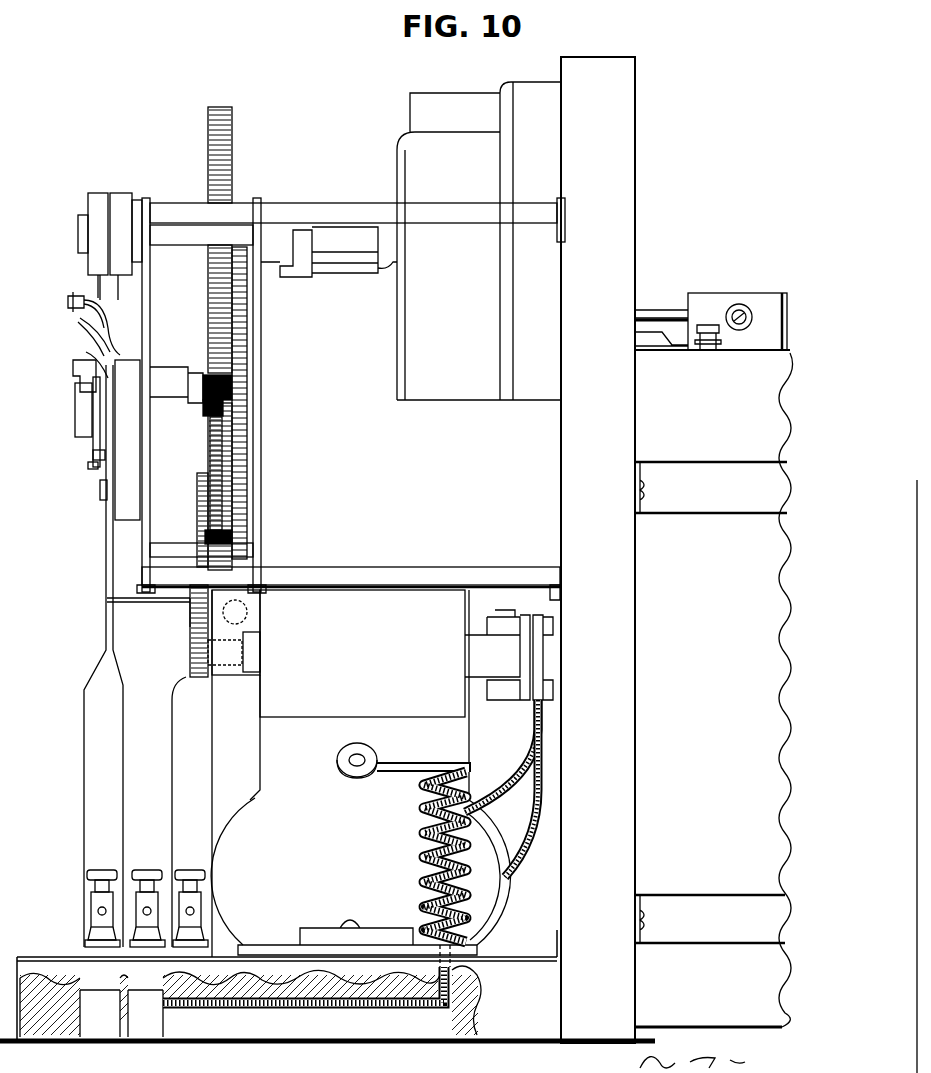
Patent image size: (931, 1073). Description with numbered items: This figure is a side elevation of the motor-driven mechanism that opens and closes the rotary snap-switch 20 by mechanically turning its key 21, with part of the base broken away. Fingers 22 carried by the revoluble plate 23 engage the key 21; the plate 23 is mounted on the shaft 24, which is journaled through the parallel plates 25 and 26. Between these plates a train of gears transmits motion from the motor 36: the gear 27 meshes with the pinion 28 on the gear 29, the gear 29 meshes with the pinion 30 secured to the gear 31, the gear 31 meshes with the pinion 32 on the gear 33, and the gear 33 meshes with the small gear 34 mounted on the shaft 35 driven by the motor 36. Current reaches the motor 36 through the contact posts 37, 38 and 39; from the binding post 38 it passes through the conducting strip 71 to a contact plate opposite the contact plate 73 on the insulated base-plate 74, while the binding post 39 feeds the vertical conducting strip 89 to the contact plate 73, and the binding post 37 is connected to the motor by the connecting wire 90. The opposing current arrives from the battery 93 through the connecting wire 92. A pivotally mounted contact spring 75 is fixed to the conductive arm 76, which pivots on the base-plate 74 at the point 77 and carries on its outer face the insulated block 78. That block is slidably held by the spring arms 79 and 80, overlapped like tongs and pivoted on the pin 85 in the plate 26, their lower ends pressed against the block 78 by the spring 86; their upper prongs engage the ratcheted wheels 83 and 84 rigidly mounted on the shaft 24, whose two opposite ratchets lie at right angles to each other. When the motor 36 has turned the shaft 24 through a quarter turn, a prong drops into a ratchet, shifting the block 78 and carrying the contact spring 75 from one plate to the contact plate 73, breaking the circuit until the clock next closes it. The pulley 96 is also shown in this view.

The rotary snap-switch 20 is at (479, 241).
The key 21 is at (356, 244).
The fingers 22 is at (382, 272).
The revoluble plate 23 is at (300, 278).
The shaft 24 is at (186, 238).
The parallel plate 25 is at (262, 200).
The front plate 26 is at (150, 198).
The gear 27 is at (232, 130).
The pinion 28 is at (205, 410).
The gear 29 is at (240, 385).
The pinion 30 is at (248, 415).
The gear 31 is at (212, 455).
The pinion 32 is at (232, 540).
The gear 33 is at (198, 523).
The small gear 34 is at (190, 642).
The shaft 35 is at (226, 650).
The motor 36 is at (406, 695).
The binding post 37 is at (150, 870).
The binding post 38 is at (205, 905).
The binding post 39 is at (90, 912).
The conducting strip 71 is at (206, 790).
The contact plate 73 is at (100, 495).
The insulated base-plate 74 is at (125, 508).
The contact spring 75 is at (78, 388).
The conductive arm 76 is at (96, 457).
The pivot point 77 is at (90, 470).
The insulated block 78 is at (80, 432).
The spring arm 79 is at (80, 348).
The spring arm 80 is at (86, 362).
The ratcheted wheel 83 is at (98, 193).
The ratcheted wheel 84 is at (120, 193).
The pin 85 is at (68, 303).
The spring 86 is at (78, 328).
The vertical conducting strip 89 is at (106, 788).
The connecting wire 90 is at (267, 1001).
The connecting wire 92 is at (660, 315).
The battery 93 is at (714, 660).
The pulley 96 is at (370, 760).